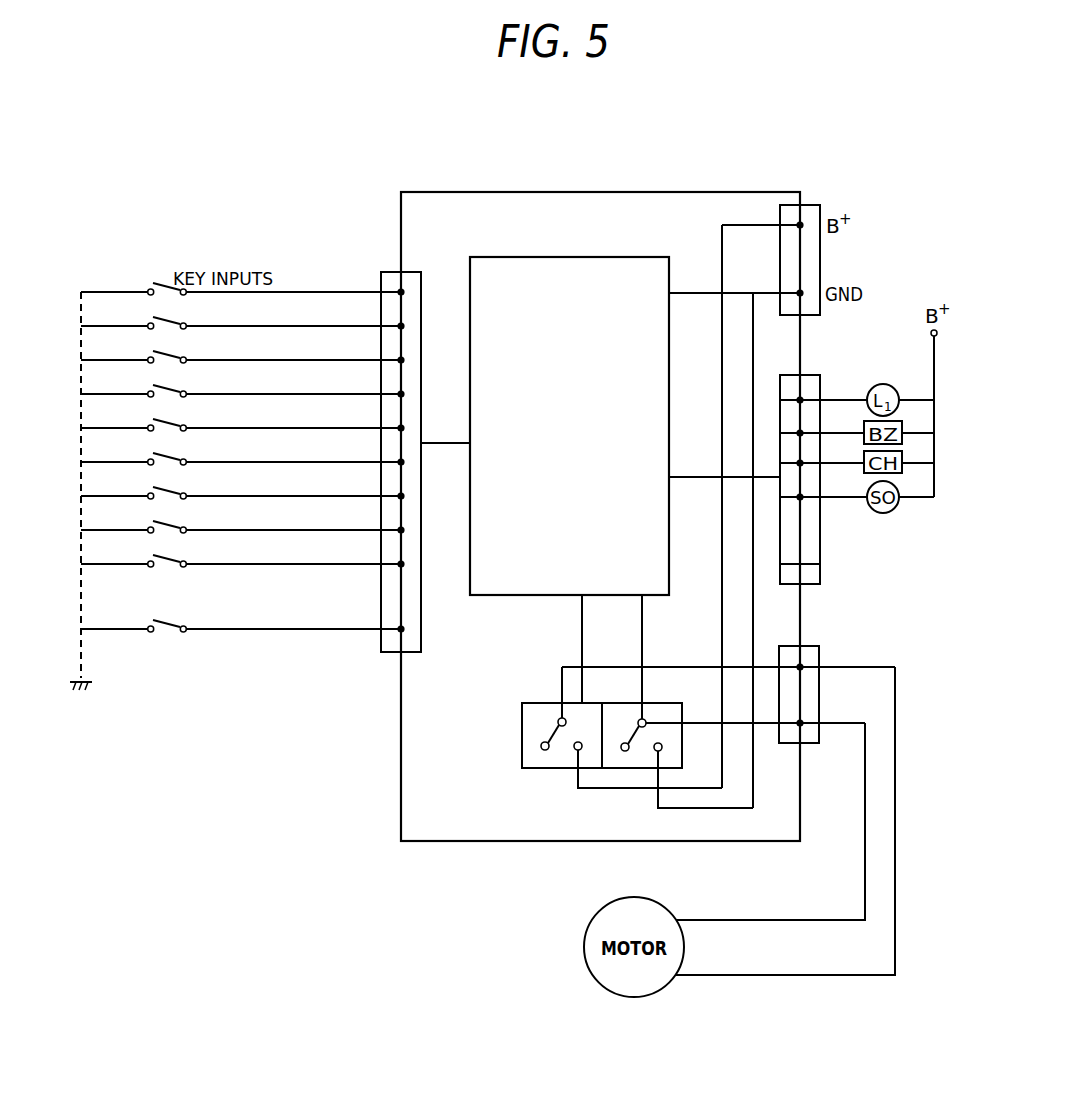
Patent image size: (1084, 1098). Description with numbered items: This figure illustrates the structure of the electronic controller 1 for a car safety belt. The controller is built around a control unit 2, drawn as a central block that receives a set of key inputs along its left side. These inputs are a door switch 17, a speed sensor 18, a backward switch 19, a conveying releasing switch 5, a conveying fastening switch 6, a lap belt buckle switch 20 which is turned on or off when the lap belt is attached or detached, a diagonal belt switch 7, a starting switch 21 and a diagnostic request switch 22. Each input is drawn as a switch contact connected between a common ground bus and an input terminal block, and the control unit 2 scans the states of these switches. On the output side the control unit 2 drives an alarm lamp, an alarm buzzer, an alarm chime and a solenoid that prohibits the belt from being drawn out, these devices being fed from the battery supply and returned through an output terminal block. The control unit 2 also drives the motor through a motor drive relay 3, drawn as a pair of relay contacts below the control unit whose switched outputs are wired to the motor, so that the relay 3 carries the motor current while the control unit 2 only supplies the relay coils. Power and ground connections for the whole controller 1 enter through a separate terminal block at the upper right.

The seat belt control device 1 is at (606, 192).
The control unit 2 is at (570, 265).
The motor drive relay 3 is at (537, 762).
The door switch 17 is at (242, 315).
The speed sensor 18 is at (242, 349).
The backward switch 19 is at (242, 383).
The conveying releasing switch 5 is at (242, 417).
The conveying fastening switch 6 is at (242, 451).
The lap belt buckle switch 20 is at (242, 485).
The diagonal switch 7 is at (242, 519).
The starting switch 21 is at (242, 553).
The diagnostic request switch 22 is at (242, 618).